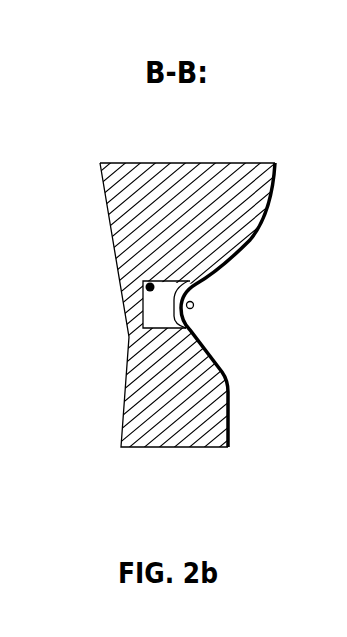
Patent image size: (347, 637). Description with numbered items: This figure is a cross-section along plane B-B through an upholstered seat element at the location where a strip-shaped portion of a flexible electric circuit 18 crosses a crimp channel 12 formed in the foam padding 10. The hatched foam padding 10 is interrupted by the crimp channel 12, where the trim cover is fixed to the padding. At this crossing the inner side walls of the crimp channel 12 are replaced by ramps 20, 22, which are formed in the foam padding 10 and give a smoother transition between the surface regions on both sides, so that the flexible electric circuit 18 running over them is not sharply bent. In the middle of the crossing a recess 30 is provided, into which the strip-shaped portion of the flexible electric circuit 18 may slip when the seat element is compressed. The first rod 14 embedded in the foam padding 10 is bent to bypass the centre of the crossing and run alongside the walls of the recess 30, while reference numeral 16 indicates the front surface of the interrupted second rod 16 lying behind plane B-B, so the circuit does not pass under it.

The foam padding 10 is at (185, 193).
The crimp channel 12 is at (257, 360).
The first rod 14 is at (148, 284).
The second rod 16 is at (194, 306).
The flexible electric circuit 18 is at (223, 253).
The ramp 20 is at (217, 267).
The ramp 22 is at (215, 345).
The recess 30 is at (186, 322).